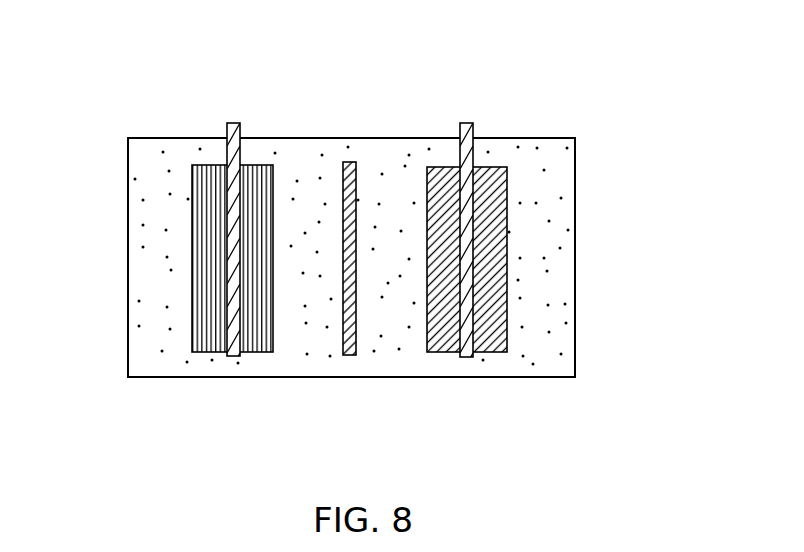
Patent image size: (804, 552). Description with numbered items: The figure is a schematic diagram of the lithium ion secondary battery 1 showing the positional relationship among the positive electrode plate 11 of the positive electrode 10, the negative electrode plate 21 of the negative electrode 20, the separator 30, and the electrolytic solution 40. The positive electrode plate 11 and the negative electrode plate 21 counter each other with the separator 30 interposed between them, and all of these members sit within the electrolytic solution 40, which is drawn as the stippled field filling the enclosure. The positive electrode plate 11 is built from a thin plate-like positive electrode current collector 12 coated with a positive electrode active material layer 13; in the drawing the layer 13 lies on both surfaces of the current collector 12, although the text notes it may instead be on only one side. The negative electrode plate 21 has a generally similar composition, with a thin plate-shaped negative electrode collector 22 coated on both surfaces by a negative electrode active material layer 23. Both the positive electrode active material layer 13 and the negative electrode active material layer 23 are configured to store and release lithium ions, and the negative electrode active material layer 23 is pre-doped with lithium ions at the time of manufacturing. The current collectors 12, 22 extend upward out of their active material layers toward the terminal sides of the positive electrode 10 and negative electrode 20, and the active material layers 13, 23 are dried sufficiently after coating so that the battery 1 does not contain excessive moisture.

The lithium ion secondary battery 1 is at (557, 108).
The positive electrode 10 is at (256, 252).
The positive electrode plate 11 is at (256, 298).
The positive electrode current collector 12 is at (218, 281).
The positive electrode active material layer 13 is at (205, 352).
The negative electrode 20 is at (487, 252).
The negative electrode plate 21 is at (487, 298).
The negative electrode collector 22 is at (455, 281).
The negative electrode active material layer 23 is at (437, 352).
The separator 30 is at (358, 178).
The electrolytic solution 40 is at (288, 150).